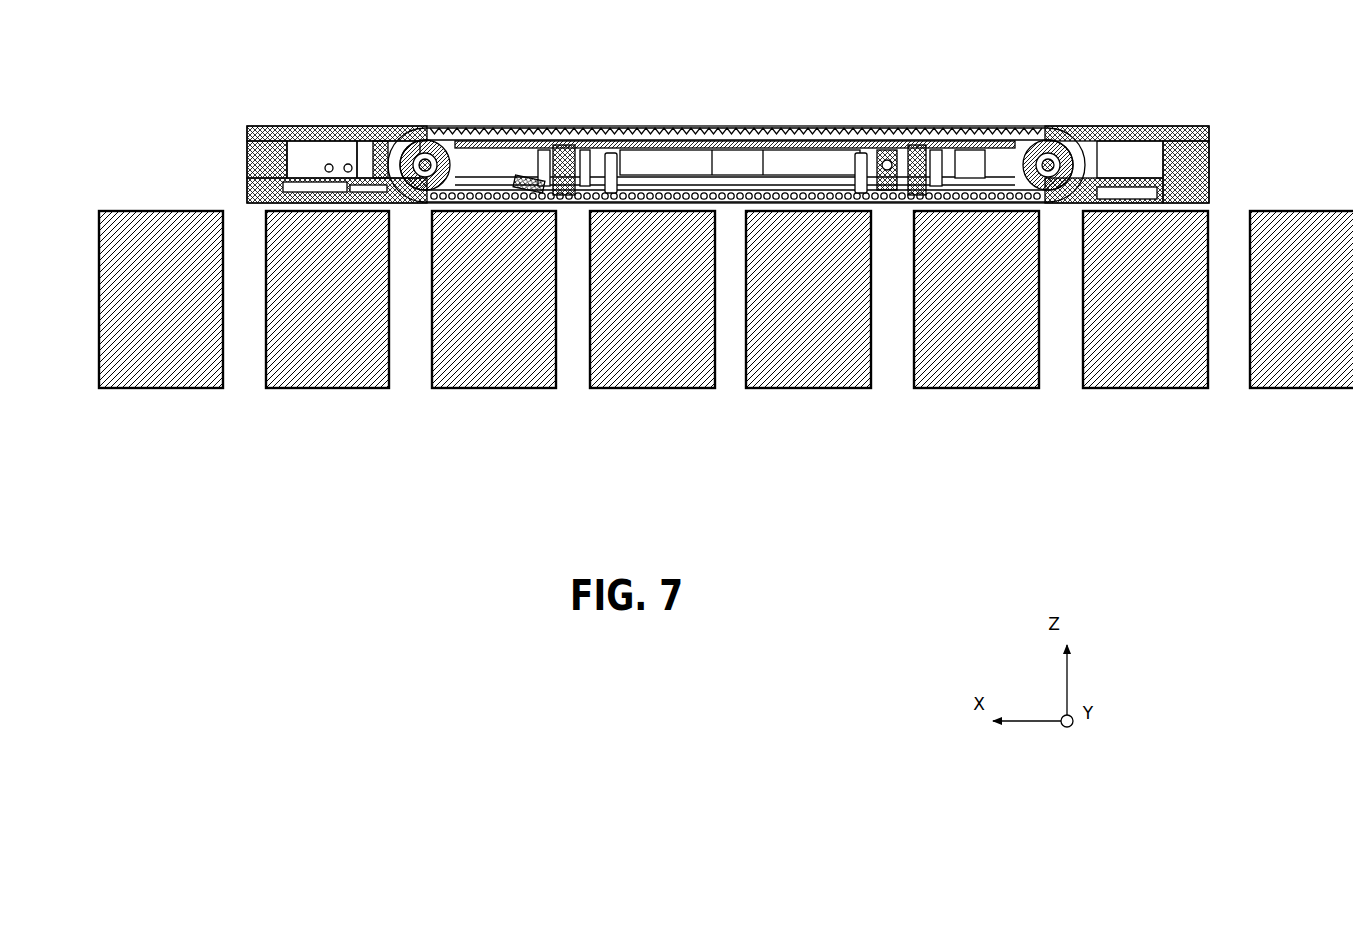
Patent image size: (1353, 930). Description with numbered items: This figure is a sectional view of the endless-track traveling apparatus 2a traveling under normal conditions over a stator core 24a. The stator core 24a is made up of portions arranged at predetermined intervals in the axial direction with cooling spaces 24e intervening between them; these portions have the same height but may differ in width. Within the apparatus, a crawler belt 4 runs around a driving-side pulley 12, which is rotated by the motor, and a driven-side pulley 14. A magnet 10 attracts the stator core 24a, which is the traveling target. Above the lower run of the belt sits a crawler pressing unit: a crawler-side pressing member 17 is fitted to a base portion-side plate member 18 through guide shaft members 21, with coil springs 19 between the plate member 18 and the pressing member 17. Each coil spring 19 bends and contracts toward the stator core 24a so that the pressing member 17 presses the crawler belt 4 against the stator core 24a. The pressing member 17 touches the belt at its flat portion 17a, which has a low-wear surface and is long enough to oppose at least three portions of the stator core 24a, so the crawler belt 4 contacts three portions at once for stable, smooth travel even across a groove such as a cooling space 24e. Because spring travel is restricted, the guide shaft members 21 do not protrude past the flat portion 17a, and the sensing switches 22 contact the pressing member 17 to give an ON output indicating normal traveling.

The endless-track traveling apparatus 2a is at (1157, 108).
The crawler belt 4 is at (577, 206).
The magnet 10 is at (790, 180).
The driving-side pulley 12 is at (432, 152).
The driven-side pulley 14 is at (1048, 152).
The crawler-side pressing member 17 is at (740, 196).
The flat portion 17a is at (785, 203).
The base portion-side plate member 18 is at (737, 142).
The coil spring 19 is at (540, 165).
The guide shaft member 21 is at (556, 175).
The sensing switch 22 is at (605, 190).
The stator core 24a is at (1122, 360).
The cooling space 24e is at (1057, 377).